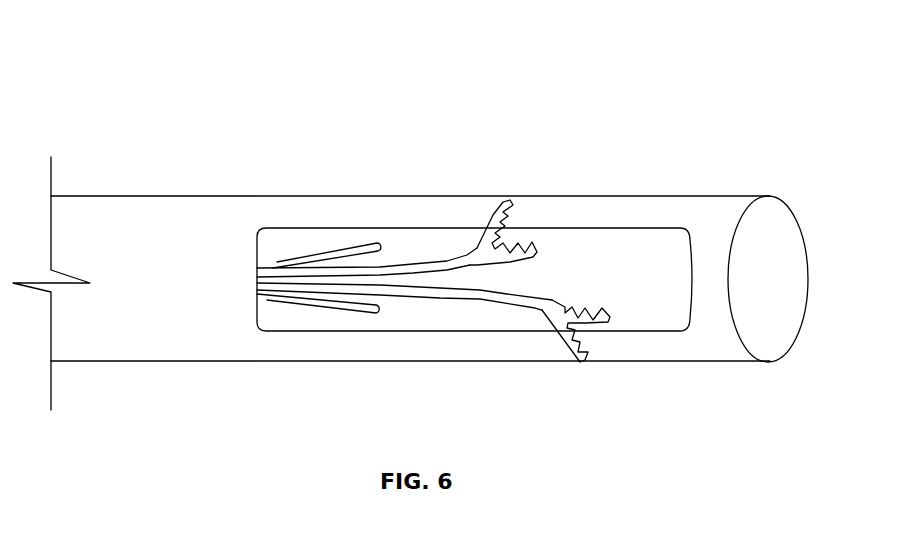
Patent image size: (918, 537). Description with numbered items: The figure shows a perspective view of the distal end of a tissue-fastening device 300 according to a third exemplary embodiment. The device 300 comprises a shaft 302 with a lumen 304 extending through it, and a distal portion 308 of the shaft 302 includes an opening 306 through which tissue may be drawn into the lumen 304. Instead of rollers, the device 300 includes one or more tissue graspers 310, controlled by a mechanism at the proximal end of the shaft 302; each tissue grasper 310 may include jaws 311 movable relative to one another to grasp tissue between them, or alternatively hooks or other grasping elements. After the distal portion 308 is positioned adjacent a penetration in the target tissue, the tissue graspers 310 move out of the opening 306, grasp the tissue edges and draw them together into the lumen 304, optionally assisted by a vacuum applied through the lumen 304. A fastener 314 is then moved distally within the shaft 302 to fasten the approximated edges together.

The device 300 is at (290, 60).
The shaft 302 is at (140, 207).
The lumen 304 is at (763, 287).
The opening 306 is at (627, 228).
The distal portion 308 is at (557, 195).
The tissue graspers 310 is at (452, 260).
The jaws 311 is at (497, 204).
The fastener 314 is at (346, 250).